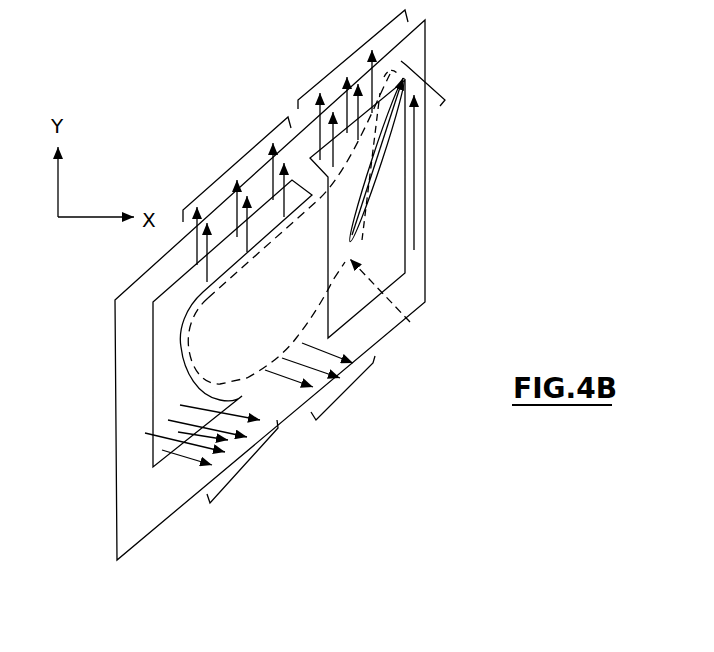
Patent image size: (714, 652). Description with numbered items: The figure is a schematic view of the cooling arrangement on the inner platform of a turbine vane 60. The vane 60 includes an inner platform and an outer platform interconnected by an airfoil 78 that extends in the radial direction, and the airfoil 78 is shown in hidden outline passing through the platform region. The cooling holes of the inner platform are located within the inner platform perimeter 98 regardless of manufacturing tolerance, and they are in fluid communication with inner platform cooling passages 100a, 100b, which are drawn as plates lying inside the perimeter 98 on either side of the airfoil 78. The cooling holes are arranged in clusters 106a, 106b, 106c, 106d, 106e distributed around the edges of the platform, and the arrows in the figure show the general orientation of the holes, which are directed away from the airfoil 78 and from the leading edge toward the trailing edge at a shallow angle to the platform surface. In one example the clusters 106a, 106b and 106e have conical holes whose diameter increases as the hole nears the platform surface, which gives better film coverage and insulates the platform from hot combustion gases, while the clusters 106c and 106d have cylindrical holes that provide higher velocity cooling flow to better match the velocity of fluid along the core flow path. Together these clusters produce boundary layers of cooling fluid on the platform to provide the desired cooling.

The vane 60 is at (510, 173).
The airfoil 78 is at (407, 313).
The inner platform perimeter 98 is at (116, 441).
The inner platform cooling passage 100a is at (156, 358).
The inner platform cooling passage 100b is at (388, 252).
The cooling hole cluster 106a is at (236, 165).
The cooling hole cluster 106b is at (355, 52).
The cooling hole cluster 106c is at (430, 82).
The cooling hole cluster 106d is at (347, 397).
The cooling hole cluster 106e is at (248, 473).